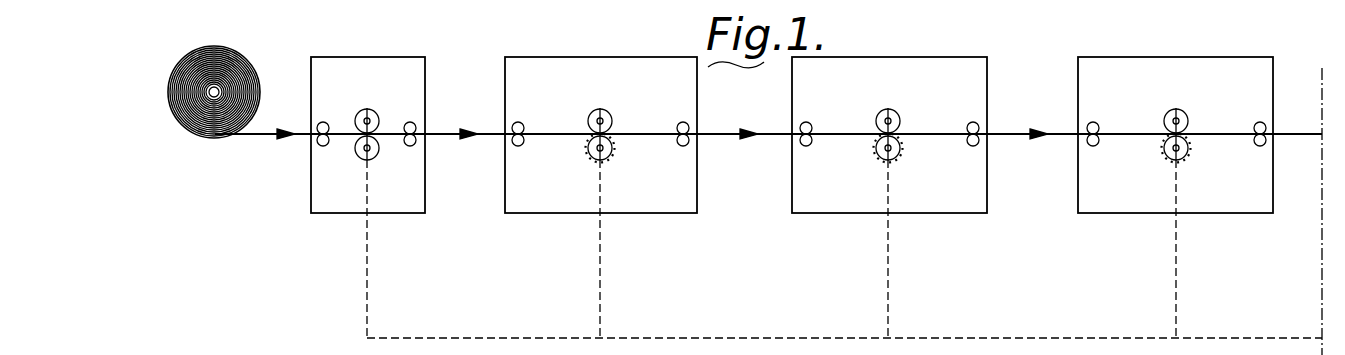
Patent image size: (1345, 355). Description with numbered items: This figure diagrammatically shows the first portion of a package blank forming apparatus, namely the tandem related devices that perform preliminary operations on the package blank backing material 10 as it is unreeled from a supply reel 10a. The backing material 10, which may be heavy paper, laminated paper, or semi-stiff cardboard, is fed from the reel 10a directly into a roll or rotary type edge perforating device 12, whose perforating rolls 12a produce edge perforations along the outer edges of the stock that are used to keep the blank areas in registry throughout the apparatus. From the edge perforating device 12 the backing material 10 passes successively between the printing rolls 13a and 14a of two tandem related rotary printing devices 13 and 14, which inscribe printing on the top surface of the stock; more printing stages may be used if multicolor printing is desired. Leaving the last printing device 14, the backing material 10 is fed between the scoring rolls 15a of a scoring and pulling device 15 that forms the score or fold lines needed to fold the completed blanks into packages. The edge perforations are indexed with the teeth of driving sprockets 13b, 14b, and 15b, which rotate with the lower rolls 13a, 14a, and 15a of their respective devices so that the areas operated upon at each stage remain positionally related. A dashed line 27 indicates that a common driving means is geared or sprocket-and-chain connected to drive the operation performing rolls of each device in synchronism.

The package blank backing material 10 is at (257, 108).
The supply reel 10a is at (218, 88).
The edge perforating device 12 is at (423, 188).
The perforating rolls 12a is at (388, 107).
The printing device 13 is at (688, 183).
The printing rolls 13a is at (612, 118).
The driving sprocket 13b is at (590, 153).
The printing device 14 is at (987, 185).
The printing rolls 14a is at (900, 117).
The driving sprocket 14b is at (883, 157).
The scoring and pulling device 15 is at (1265, 193).
The scoring rolls 15a is at (1188, 117).
The driving sprocket 15b is at (1168, 157).
The dashed line 27 is at (1013, 336).